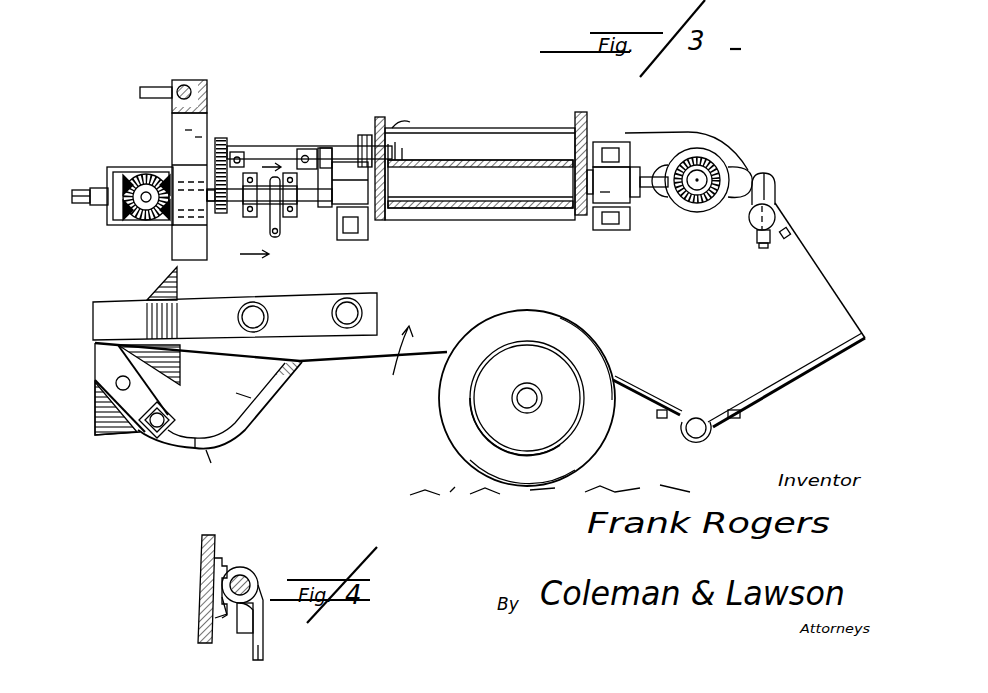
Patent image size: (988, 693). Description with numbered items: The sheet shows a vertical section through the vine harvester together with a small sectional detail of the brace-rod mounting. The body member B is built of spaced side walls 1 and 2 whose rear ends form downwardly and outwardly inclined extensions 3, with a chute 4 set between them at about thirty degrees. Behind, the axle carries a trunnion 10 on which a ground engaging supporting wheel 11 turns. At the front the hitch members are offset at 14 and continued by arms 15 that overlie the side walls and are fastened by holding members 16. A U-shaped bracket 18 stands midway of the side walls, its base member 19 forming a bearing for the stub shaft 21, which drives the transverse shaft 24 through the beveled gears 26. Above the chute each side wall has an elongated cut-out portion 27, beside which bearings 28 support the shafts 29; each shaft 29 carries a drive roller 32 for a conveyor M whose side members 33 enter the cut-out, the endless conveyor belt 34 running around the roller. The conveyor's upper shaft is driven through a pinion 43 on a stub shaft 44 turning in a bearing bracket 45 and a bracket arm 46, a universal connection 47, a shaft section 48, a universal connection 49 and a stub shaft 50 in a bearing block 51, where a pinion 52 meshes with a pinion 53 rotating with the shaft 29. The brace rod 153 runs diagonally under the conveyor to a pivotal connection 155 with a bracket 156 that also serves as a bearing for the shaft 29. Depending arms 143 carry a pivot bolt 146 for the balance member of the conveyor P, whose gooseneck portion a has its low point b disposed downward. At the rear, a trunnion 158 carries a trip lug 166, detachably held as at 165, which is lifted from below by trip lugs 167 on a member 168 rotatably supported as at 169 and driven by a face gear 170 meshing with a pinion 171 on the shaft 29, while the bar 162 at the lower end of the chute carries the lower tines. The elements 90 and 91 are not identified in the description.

In FIG. 4, the side wall 1 is at (203, 590).
In FIG. 3, the side wall 2 is at (176, 258).
In FIG. 3, the inclined extension 3 is at (808, 293).
In FIG. 3, the chute 4 is at (254, 210).
In FIG. 3, the trunnion 10 is at (527, 402).
In FIG. 3, the ground engaging supporting wheel 11 is at (447, 417).
In FIG. 3, the offset portion 14 is at (178, 292).
In FIG. 3, the arm 15 is at (311, 301).
In FIG. 3, the holding member 16 is at (355, 310).
In FIG. 3, the bracket 18 is at (152, 225).
In FIG. 3, the base member 19 is at (94, 190).
In FIG. 3, the stub shaft 21 is at (100, 206).
In FIG. 3, the shaft 24 is at (146, 201).
In FIG. 3, the beveled gears 26 is at (146, 183).
In FIG. 3, the cut-out portion 27 is at (597, 142).
In FIG. 3, the bearing 28 is at (340, 208).
In FIG. 3, the shaft 29 is at (660, 192).
In FIG. 4, the shaft 29 is at (238, 587).
In FIG. 3, the drive roller 32 is at (494, 185).
In FIG. 3, the side member 33 is at (583, 113).
In FIG. 3, the endless conveyor belt 34 is at (547, 209).
In FIG. 3, the pinion 43 is at (379, 117).
In FIG. 3, the stub shaft 44 is at (302, 143).
In FIG. 3, the bearing bracket 45 is at (380, 118).
In FIG. 3, the bracket arm 46 is at (313, 201).
In FIG. 3, the universal connection 47 is at (305, 148).
In FIG. 3, the shaft section 48 is at (281, 153).
In FIG. 3, the universal connection 49 is at (240, 152).
In FIG. 3, the stub shaft 50 is at (174, 166).
In FIG. 3, the bearing block 51 is at (207, 213).
In FIG. 3, the pinion 52 is at (221, 138).
In FIG. 3, the pinion 53 is at (221, 213).
In FIG. 3, the worm shaft 90 is at (162, 185).
In FIG. 3, the gear hub 91 is at (141, 208).
In FIG. 3, the depending arm 143 is at (168, 410).
In FIG. 3, the pivot bolt 146 is at (157, 440).
In FIG. 3, the brace rod 153 is at (278, 236).
In FIG. 4, the brace rod 153 is at (264, 652).
In FIG. 4, the pivotal connection 155 is at (258, 578).
In FIG. 3, the bracket 156 is at (250, 212).
In FIG. 4, the bracket 156 is at (218, 558).
In FIG. 3, the trunnion 158 is at (770, 217).
In FIG. 3, the bar 162 is at (696, 440).
In FIG. 3, the detachable holding 165 is at (757, 238).
In FIG. 3, the trip lug 166 is at (765, 182).
In FIG. 3, the trip lug 167 is at (660, 168).
In FIG. 3, the rotatable member 168 is at (705, 157).
In FIG. 3, the rotatable support 169 is at (697, 190).
In FIG. 3, the face gear 170 is at (708, 200).
In FIG. 3, the pinion 171 is at (675, 200).
In FIG. 3, the conveyor M is at (410, 118).
In FIG. 3, the body member B is at (271, 359).
In FIG. 3, the conveyor P is at (116, 436).
In FIG. 3, the gooseneck portion a is at (220, 405).
In FIG. 3, the low point b is at (206, 460).